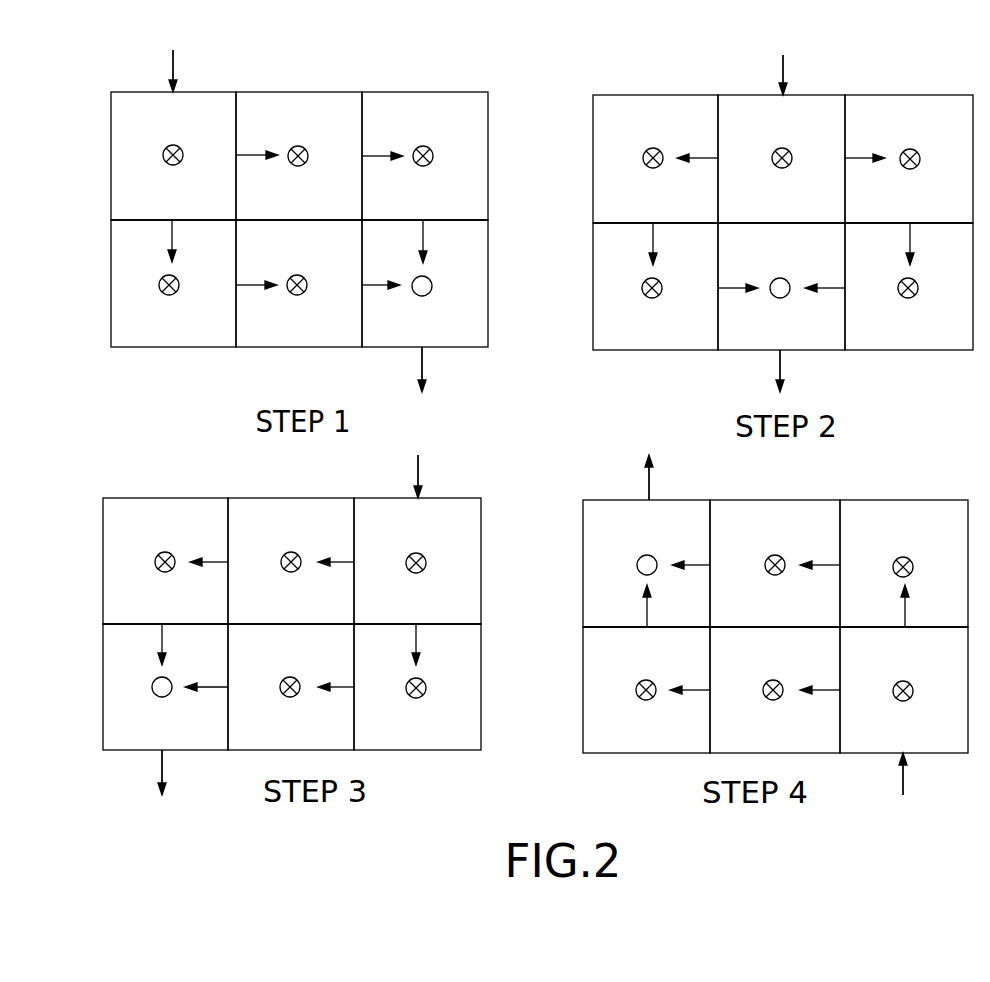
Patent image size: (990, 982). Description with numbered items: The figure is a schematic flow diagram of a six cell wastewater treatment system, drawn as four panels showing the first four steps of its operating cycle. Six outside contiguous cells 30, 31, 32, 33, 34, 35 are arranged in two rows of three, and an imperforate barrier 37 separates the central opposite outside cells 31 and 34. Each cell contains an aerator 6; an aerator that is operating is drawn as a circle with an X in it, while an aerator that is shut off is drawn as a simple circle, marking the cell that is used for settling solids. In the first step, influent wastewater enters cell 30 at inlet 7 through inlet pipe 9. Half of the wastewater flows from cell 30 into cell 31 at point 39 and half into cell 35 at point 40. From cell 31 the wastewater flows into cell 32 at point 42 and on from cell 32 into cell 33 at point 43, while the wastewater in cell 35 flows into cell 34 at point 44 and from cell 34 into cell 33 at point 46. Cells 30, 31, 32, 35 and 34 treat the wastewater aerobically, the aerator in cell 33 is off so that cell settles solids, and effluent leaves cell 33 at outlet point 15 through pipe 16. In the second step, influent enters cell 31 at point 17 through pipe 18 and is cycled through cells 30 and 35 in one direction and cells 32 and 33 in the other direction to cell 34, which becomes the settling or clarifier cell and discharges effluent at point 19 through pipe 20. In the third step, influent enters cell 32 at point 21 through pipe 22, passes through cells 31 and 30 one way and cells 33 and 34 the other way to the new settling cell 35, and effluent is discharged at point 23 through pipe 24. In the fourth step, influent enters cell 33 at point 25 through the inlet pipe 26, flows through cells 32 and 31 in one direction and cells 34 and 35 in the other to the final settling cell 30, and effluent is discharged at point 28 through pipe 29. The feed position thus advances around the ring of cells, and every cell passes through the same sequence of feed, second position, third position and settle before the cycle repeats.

The aerator 6 is at (165, 162).
The inlet 7 is at (175, 92).
The inlet pipe 9 is at (170, 68).
The outlet point 15 is at (420, 350).
The pipe 16 is at (425, 355).
The point 17 is at (786, 95).
The pipe 18 is at (780, 72).
The point 19 is at (778, 352).
The pipe 20 is at (783, 355).
The point 21 is at (420, 498).
The pipe 22 is at (416, 478).
The point 23 is at (165, 755).
The pipe 24 is at (160, 755).
The point 25 is at (900, 757).
The incoming article 26 is at (905, 781).
The point 28 is at (651, 497).
The pipe 29 is at (648, 492).
The cell 30 is at (152, 128).
The cell 31 is at (265, 128).
The cell 32 is at (370, 128).
The cell 33 is at (475, 343).
The cell 34 is at (277, 343).
The cell 35 is at (113, 343).
The imperforate barrier 37 is at (244, 221).
The point 39 is at (236, 155).
The point 40 is at (172, 220).
The point 42 is at (362, 156).
The point 43 is at (423, 220).
The point 44 is at (236, 285).
The point 46 is at (362, 285).